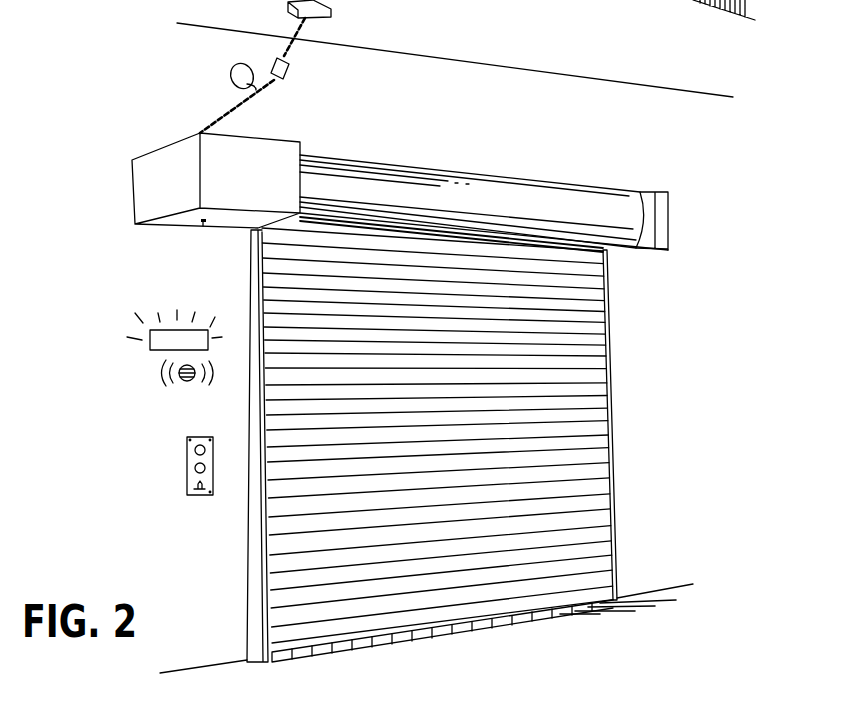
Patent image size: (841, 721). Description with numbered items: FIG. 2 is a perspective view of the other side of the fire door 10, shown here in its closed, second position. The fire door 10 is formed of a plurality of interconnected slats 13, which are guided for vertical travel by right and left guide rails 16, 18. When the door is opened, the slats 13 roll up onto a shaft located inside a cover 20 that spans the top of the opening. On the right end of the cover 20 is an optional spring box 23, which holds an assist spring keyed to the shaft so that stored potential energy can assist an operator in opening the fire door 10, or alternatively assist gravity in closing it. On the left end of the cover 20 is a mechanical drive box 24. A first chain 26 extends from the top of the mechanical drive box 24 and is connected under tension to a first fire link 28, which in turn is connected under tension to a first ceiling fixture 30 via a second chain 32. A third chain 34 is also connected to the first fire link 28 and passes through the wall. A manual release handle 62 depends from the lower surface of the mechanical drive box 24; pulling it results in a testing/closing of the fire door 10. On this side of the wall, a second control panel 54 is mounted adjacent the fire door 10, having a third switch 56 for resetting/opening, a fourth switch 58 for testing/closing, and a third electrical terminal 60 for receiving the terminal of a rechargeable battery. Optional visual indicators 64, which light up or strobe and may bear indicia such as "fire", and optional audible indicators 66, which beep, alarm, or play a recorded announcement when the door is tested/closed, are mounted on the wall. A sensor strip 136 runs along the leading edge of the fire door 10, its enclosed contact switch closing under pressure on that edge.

The fire door 10 is at (640, 370).
The slats 13 is at (588, 428).
The right guide rail 16 is at (613, 508).
The left guide rail 18 is at (250, 582).
The cover 20 is at (503, 190).
The spring box 23 is at (662, 210).
The mechanical drive box 24 is at (286, 165).
The first chain 26 is at (222, 115).
The first fire link 28 is at (290, 70).
The first ceiling fixture 30 is at (330, 13).
The second chain 32 is at (300, 42).
The third chain 34 is at (230, 88).
The second control panel 54 is at (198, 437).
The third switch 56 is at (189, 447).
The fourth switch 58 is at (190, 468).
The third electrical terminal 60 is at (192, 489).
The manual release handle 62 is at (206, 222).
The visual indicators 64 is at (158, 343).
The audible indicators 66 is at (167, 382).
The sensor strip 136 is at (413, 637).